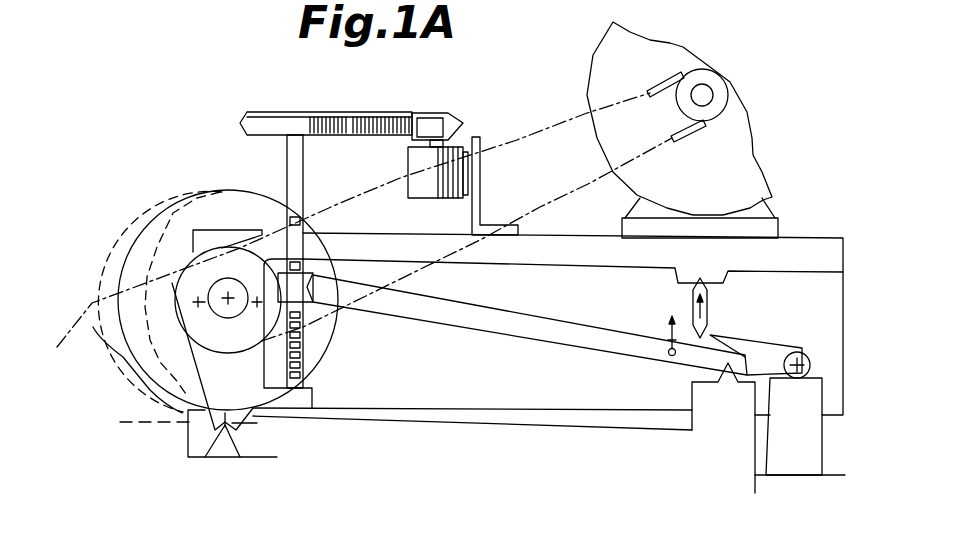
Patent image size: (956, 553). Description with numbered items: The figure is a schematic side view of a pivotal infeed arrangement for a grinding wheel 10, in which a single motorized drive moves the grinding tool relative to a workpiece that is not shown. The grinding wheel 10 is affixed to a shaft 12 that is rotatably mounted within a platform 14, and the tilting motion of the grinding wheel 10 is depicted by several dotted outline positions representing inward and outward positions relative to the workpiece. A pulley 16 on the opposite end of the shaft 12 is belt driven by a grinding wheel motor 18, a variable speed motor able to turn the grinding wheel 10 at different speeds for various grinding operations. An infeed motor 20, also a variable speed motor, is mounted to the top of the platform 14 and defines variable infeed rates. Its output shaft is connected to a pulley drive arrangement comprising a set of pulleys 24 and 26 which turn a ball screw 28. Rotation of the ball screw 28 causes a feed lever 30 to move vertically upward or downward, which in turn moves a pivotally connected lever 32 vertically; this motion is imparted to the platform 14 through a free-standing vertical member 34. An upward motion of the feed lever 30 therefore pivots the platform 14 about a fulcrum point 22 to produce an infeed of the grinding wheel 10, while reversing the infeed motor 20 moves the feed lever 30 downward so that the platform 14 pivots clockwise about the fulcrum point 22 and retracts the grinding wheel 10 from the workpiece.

The grinding wheel 10 is at (147, 335).
The shaft 12 is at (227, 306).
The platform 14 is at (805, 245).
The pulley 16 is at (232, 345).
The grinding wheel motor 18 is at (733, 157).
The infeed motor 20 is at (437, 202).
The fulcrum point 22 is at (238, 447).
The pulley 24 is at (440, 127).
The pulley 26 is at (310, 112).
The ball screw 28 is at (297, 177).
The feed lever 30 is at (487, 315).
The lever 32 is at (763, 350).
The free-standing vertical member 34 is at (708, 312).